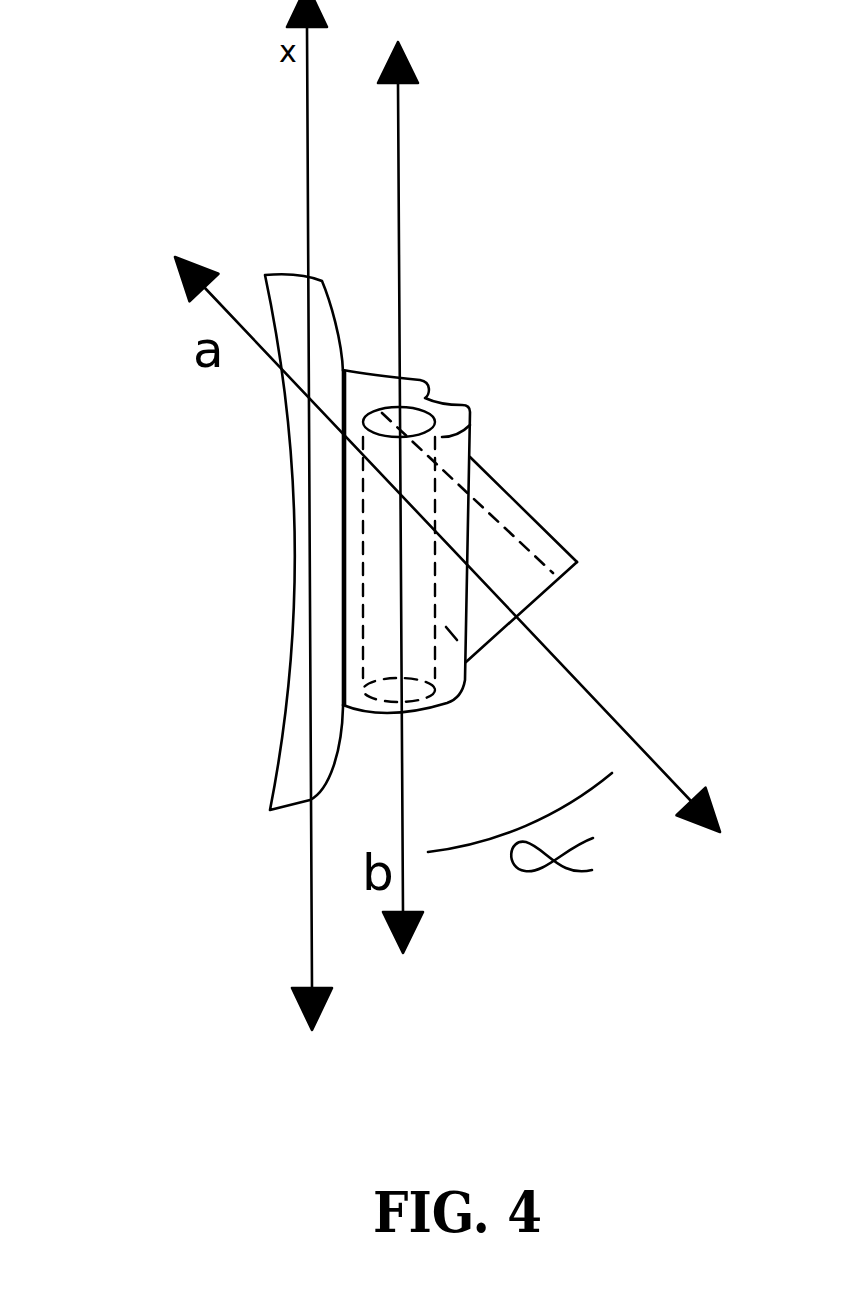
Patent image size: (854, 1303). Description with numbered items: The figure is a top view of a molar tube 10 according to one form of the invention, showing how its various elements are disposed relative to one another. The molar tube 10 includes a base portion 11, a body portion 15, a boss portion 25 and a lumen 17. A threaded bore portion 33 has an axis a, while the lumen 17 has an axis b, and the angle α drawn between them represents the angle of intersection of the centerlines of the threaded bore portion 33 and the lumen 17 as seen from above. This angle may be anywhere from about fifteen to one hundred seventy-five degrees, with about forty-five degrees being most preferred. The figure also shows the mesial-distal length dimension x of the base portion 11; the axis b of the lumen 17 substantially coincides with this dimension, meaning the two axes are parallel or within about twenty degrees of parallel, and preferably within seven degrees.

The molar tube 10 is at (195, 818).
The base portion 11 is at (283, 287).
The body portion 15 is at (453, 405).
The lumen 17 is at (383, 618).
The boss portion 25 is at (533, 537).
The threaded bore portion 33 is at (530, 590).